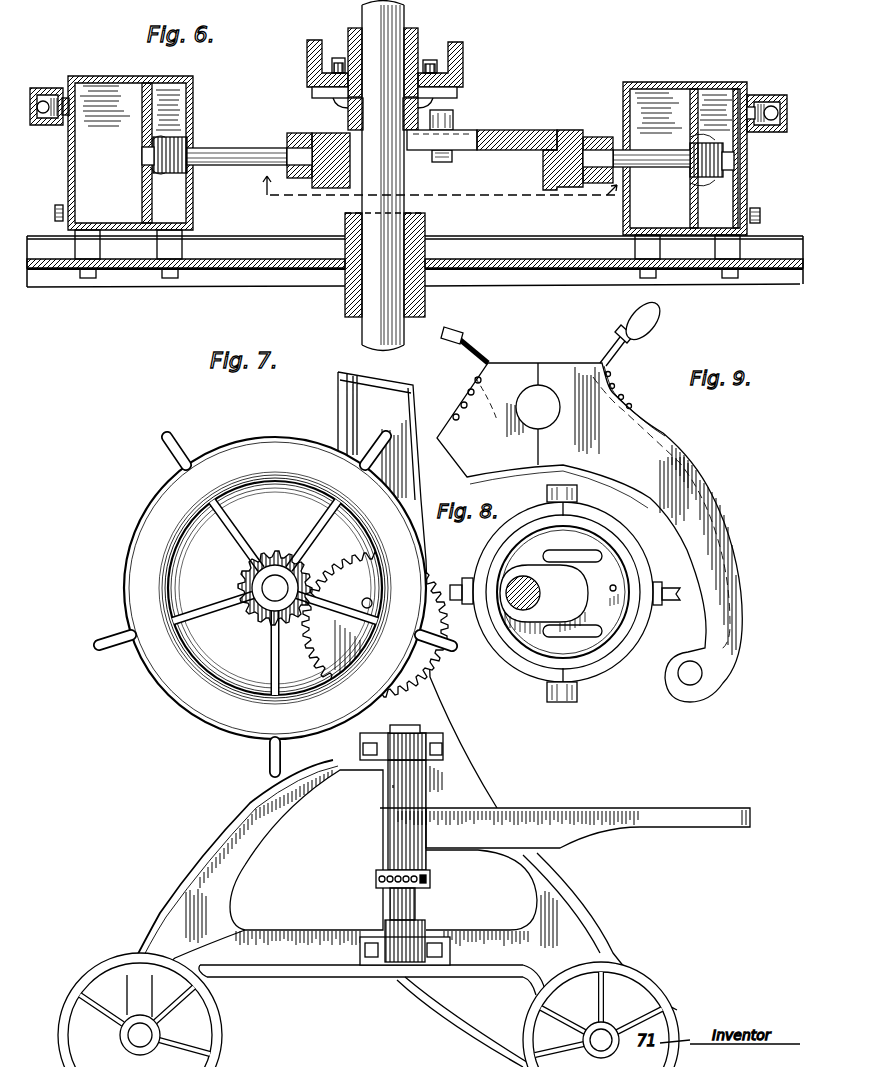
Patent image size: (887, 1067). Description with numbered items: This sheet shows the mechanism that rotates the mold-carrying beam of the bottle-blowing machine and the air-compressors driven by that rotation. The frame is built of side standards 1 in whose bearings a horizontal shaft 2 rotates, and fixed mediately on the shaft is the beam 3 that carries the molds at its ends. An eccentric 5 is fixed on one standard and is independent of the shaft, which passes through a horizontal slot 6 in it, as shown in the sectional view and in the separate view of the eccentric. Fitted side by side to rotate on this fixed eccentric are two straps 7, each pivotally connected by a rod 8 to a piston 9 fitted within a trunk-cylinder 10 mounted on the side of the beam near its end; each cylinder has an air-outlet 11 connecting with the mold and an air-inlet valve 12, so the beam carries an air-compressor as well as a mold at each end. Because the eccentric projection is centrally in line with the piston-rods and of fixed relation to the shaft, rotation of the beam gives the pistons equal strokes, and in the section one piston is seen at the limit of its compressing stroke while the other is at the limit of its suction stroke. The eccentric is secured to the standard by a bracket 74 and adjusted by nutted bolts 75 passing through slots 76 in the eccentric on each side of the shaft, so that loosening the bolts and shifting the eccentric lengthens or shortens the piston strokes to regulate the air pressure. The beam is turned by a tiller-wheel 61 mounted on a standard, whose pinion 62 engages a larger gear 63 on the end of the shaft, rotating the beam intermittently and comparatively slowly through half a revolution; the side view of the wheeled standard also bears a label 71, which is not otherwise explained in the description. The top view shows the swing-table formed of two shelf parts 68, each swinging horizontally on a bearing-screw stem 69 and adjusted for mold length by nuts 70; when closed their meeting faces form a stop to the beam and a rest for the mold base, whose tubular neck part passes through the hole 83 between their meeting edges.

In FIG. 7, the side standard 1 is at (546, 882).
In FIG. 6, the horizontal shaft 2 is at (383, 176).
In FIG. 7, the horizontal shaft 2 is at (362, 608).
In FIG. 8, the horizontal shaft 2 is at (540, 594).
In FIG. 6, the beam 3 is at (415, 261).
In FIG. 6, the eccentric 5 is at (527, 132).
In FIG. 8, the eccentric 5 is at (610, 595).
In FIG. 6, the slot 6 is at (454, 151).
In FIG. 8, the slot 6 is at (544, 599).
In FIG. 6, the strap 7 is at (314, 182).
In FIG. 8, the strap 7 is at (640, 562).
In FIG. 6, the rod 8 is at (236, 148).
In FIG. 6, the piston 9 is at (146, 148).
In FIG. 6, the trunk-cylinder 10 is at (122, 74).
In FIG. 6, the air-outlet 11 is at (44, 208).
In FIG. 6, the air-inlet valve 12 is at (785, 93).
In FIG. 7, the tiller-wheel 61 is at (238, 448).
In FIG. 7, the pinion 62 is at (280, 556).
In FIG. 7, the gear 63 is at (375, 625).
In FIG. 7, the shelf part 68 is at (550, 810).
In FIG. 9, the shelf part 68 is at (589, 499).
In FIG. 7, the bearing-screw stem 69 is at (393, 785).
In FIG. 9, the bearing-screw stem 69 is at (703, 675).
In FIG. 7, the nut 70 is at (432, 879).
In FIG. 7, the opening 71 is at (345, 853).
In FIG. 6, the bracket 74 is at (345, 112).
In FIG. 6, the nutted bolt 75 is at (455, 118).
In FIG. 8, the slot 76 is at (572, 597).
In FIG. 9, the hole 83 is at (538, 414).